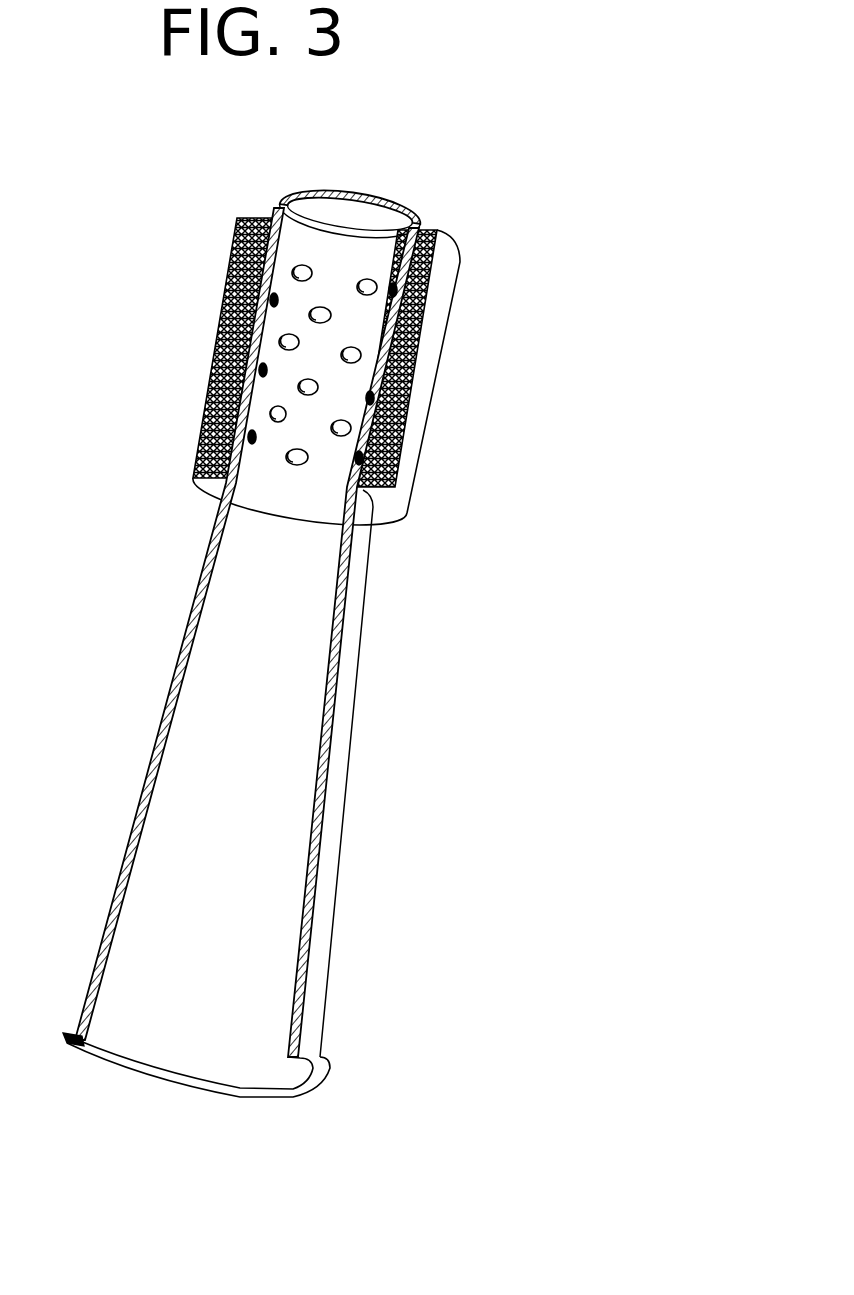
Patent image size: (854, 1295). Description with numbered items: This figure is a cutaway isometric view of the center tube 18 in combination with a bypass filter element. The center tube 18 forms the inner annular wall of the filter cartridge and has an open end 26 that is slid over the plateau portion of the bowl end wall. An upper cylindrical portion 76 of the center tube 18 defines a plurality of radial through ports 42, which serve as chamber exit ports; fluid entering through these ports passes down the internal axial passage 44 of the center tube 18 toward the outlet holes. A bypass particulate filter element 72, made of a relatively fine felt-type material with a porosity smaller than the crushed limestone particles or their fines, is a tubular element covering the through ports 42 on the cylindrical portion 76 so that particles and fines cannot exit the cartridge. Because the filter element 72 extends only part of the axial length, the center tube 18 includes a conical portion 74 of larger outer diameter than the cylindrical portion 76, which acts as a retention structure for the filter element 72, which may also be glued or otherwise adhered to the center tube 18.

The center tube 18 is at (348, 757).
The open end 26 is at (273, 1107).
The radial through ports 42 is at (280, 342).
The internal axial passage 44 is at (270, 648).
The bypass particulate filter element 72 is at (231, 255).
The conical portion 74 is at (313, 903).
The cylindrical portion 76 is at (418, 345).